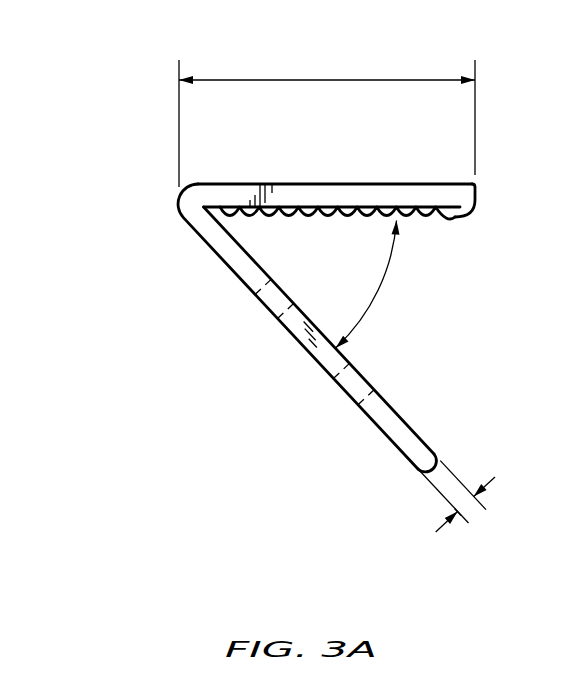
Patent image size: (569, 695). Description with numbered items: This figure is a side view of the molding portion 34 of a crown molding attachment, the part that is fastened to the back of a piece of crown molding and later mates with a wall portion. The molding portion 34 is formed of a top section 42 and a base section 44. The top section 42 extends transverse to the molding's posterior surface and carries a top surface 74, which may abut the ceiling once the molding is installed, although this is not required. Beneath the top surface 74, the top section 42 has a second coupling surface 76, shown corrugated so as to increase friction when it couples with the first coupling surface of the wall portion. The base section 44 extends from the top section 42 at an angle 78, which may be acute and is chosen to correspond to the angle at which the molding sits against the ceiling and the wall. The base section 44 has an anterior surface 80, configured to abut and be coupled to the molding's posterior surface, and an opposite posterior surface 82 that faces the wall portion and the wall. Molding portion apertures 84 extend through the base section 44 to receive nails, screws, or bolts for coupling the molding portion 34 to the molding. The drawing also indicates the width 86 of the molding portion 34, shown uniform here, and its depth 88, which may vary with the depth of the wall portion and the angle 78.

The molding portion 34 is at (95, 121).
The top section 42 is at (467, 193).
The base section 44 is at (390, 435).
The top surface 74 is at (333, 184).
The second coupling surface 76 is at (448, 218).
The angle 78 is at (381, 289).
The anterior surface 80 is at (368, 417).
The posterior surface 82 is at (400, 417).
The molding portion apertures 84 is at (343, 392).
The width 86 is at (495, 477).
The depth 88 is at (327, 79).